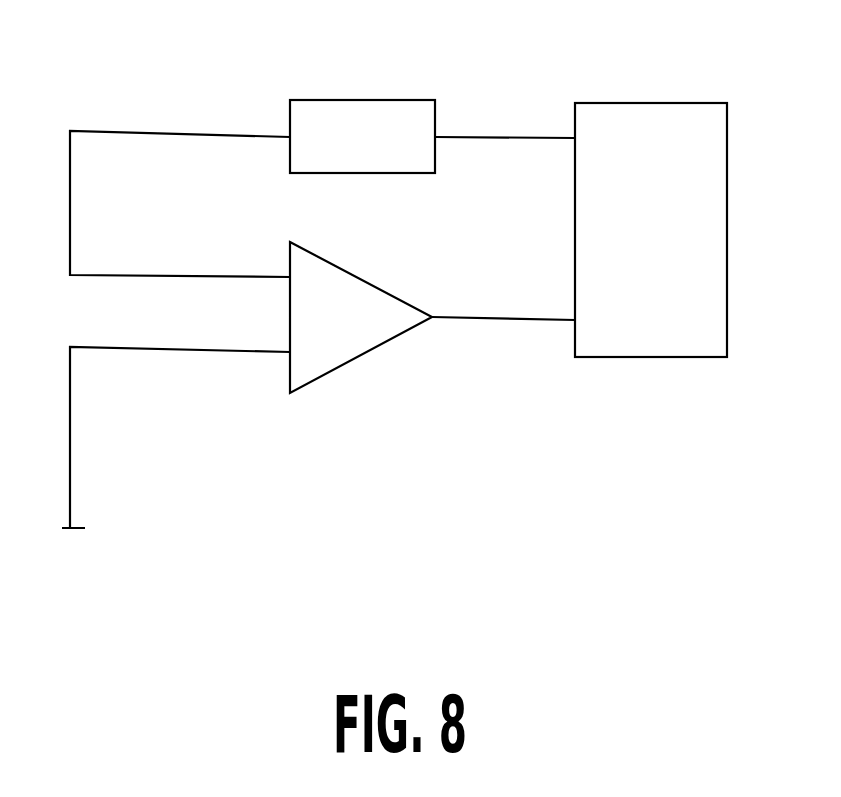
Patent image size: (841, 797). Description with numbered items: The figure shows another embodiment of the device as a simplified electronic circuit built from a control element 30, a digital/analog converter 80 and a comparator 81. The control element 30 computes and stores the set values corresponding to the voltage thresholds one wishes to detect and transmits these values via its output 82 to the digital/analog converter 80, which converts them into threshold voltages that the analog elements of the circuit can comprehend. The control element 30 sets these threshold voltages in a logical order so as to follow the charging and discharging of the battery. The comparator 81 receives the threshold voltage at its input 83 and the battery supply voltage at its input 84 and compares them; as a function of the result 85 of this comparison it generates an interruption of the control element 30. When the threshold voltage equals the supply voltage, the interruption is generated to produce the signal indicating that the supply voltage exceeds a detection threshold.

The digital/analog converter 80 is at (333, 95).
The output 82 is at (495, 137).
The control element 30 is at (704, 368).
The comparator 81 is at (355, 378).
The input 83 is at (284, 272).
The input 84 is at (282, 362).
The result 85 is at (496, 320).